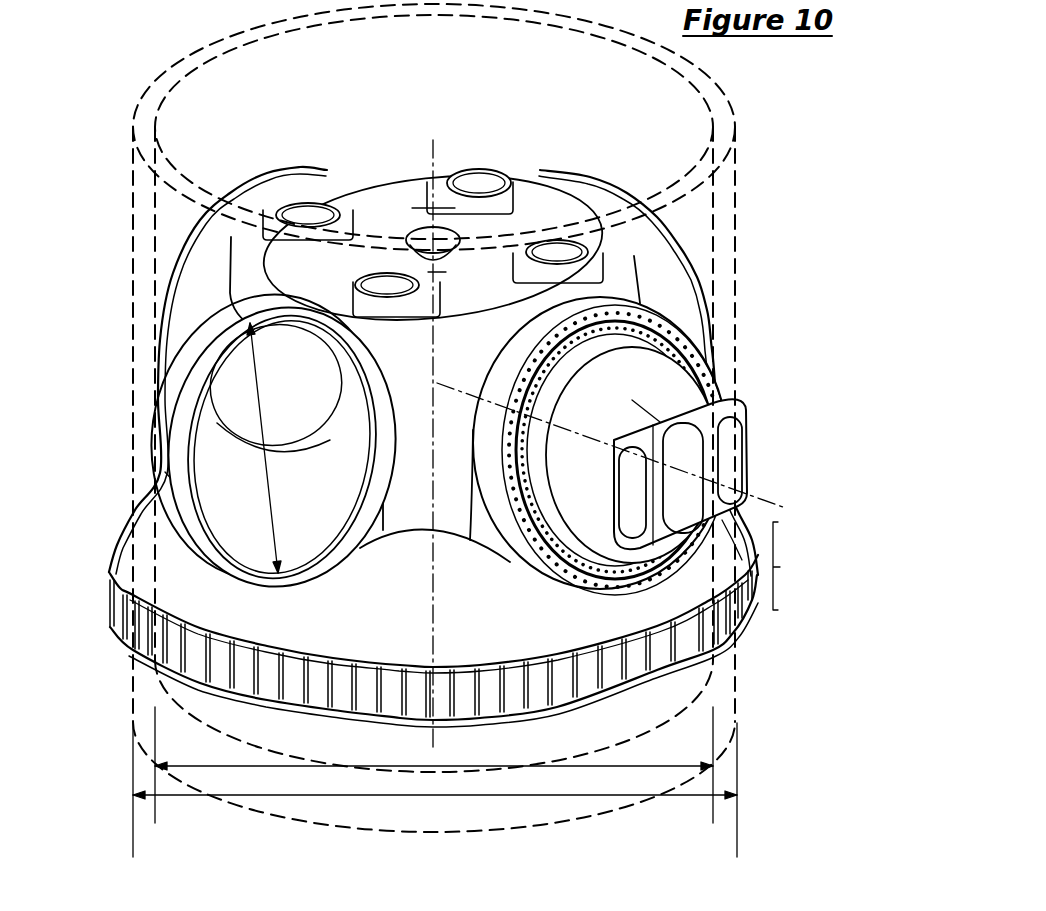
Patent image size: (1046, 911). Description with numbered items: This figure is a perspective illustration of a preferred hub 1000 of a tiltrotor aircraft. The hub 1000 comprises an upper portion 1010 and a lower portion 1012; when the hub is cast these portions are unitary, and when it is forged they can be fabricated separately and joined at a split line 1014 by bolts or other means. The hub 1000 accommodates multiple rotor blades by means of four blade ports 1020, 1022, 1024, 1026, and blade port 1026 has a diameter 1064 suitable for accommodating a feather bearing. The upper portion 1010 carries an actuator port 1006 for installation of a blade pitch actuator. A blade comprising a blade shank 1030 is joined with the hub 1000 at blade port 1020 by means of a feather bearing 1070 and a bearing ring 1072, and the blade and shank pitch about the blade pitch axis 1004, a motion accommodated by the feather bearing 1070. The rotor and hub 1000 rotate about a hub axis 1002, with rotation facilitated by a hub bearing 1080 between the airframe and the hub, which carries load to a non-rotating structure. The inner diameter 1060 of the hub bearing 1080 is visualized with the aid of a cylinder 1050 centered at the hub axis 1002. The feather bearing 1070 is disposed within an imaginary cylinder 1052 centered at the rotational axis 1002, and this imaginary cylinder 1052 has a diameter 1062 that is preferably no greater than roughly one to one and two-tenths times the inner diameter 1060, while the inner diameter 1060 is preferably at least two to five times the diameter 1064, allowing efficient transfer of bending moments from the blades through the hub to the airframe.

The hub 1000 is at (211, 146).
The hub axis 1002 is at (416, 188).
The blade pitch axis 1004 is at (767, 500).
The actuator port 1006 is at (490, 168).
The upper portion 1010 is at (420, 183).
The lower portion 1012 is at (120, 506).
The split line 1014 is at (462, 518).
The blade port 1020 is at (600, 295).
The blade port 1022 is at (540, 176).
The blade port 1024 is at (326, 173).
The blade port 1026 is at (248, 318).
The blade shank 1030 is at (745, 415).
The cylinder 1050 is at (245, 805).
The imaginary cylinder 1052 is at (738, 675).
The inner diameter 1060 is at (413, 797).
The diameter 1062 is at (583, 767).
The diameter 1064 is at (275, 470).
The feather bearing 1070 is at (566, 572).
The bearing ring 1072 is at (560, 597).
The hub bearing 1080 is at (780, 567).